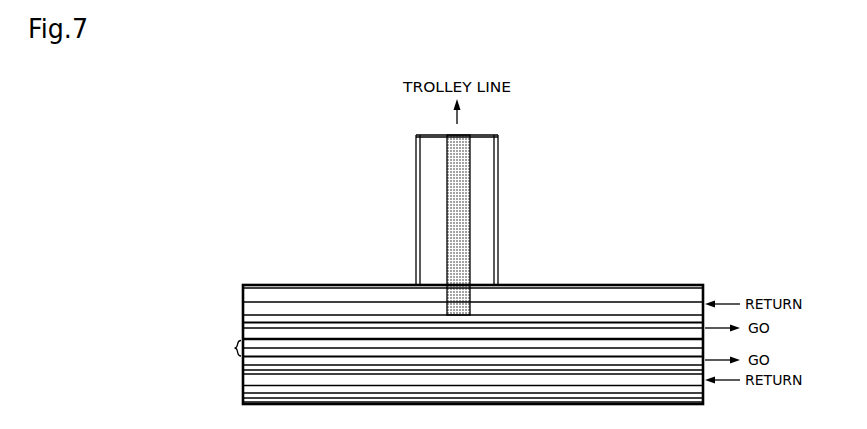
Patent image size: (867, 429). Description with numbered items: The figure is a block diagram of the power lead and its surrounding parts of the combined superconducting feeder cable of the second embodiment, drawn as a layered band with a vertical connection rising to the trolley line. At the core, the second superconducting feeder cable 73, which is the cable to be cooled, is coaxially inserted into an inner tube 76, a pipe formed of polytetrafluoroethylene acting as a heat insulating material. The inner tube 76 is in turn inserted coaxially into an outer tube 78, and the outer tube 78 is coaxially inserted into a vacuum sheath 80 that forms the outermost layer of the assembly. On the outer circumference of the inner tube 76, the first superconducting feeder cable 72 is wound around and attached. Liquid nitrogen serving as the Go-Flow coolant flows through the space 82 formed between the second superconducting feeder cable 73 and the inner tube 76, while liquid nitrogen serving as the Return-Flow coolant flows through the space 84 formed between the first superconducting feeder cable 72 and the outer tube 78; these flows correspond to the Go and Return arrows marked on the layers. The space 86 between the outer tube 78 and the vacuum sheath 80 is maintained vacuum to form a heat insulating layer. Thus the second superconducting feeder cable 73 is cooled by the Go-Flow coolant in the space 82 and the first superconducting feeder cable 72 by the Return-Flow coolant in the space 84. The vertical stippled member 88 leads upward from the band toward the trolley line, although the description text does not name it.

The vacuum sheath 80 is at (240, 285).
The outer tube 78 is at (243, 302).
The first superconducting feeder cable 72 is at (242, 314).
The space 84 is at (242, 317).
The inner tube 76 is at (242, 325).
The space 82 is at (242, 335).
The second superconducting feeder cable 73 is at (233, 348).
The space 86 is at (242, 400).
The trolley line connection 88 is at (445, 258).